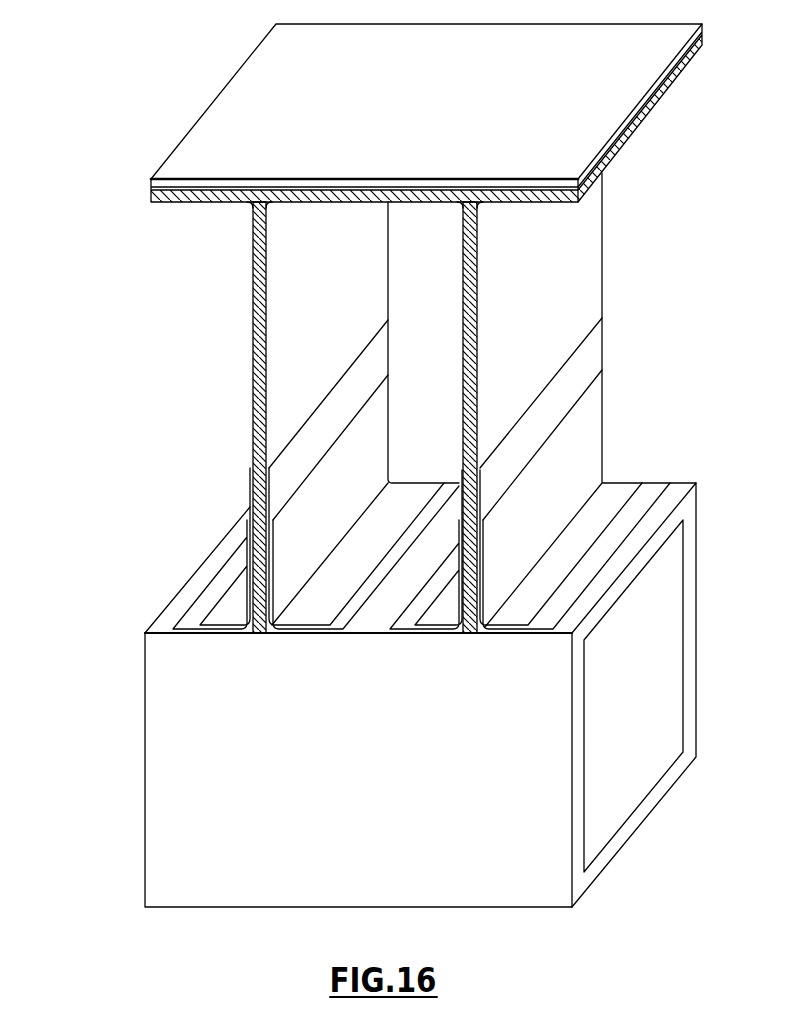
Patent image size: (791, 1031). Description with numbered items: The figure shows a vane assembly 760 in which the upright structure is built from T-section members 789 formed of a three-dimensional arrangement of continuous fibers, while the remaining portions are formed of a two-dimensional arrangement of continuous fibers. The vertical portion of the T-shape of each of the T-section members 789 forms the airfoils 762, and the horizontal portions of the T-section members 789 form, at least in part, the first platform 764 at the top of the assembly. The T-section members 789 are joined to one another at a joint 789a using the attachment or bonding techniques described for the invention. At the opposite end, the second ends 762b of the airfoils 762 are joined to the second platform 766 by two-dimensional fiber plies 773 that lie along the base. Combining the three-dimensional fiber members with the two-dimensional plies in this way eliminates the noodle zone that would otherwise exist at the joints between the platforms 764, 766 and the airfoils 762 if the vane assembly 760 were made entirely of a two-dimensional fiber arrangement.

The vane assembly 760 is at (125, 490).
The airfoils 762 is at (240, 411).
The second ends of the airfoils 762b is at (296, 620).
The first platform 764 is at (641, 133).
The second platform 766 is at (590, 840).
The 2D fiber plies 773 is at (593, 415).
The T-section members 789 is at (241, 292).
The joint 789a is at (356, 203).